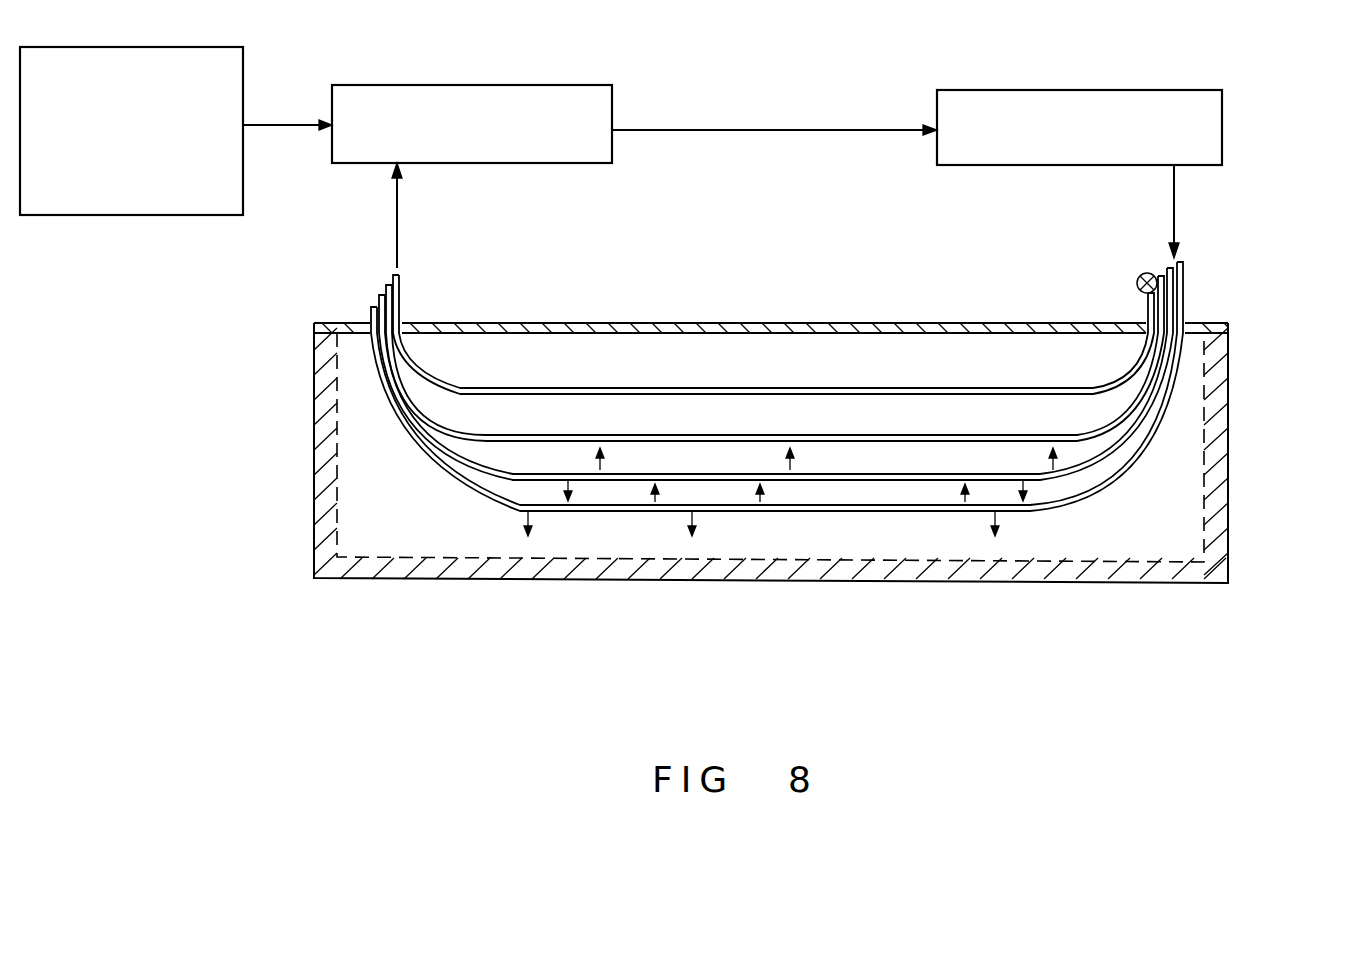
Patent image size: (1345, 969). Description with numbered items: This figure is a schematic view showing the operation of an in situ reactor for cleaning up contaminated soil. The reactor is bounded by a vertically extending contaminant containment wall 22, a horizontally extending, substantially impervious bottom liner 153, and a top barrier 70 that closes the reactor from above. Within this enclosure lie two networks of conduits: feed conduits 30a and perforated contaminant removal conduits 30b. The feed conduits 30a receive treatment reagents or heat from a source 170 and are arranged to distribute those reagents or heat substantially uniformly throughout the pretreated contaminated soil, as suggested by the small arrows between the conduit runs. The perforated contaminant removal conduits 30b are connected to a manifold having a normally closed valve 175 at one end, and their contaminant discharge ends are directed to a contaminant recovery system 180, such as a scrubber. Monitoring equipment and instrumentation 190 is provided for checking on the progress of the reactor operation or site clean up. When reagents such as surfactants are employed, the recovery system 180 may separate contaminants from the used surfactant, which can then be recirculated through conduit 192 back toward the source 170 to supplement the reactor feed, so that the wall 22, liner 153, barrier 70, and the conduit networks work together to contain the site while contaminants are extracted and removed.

The monitoring equipment and instrumentation 190 is at (146, 151).
The contaminant recovery system 180 is at (489, 146).
The source 170 is at (1100, 148).
The conduit 192 is at (806, 131).
The normally closed valve 175 is at (1138, 276).
The top barrier 70 is at (873, 323).
The contaminant containment wall 22 is at (1232, 441).
The bottom liner 153 is at (1104, 583).
The perforated contaminant removal conduits 30b is at (683, 435).
The feed conduits 30a is at (513, 477).